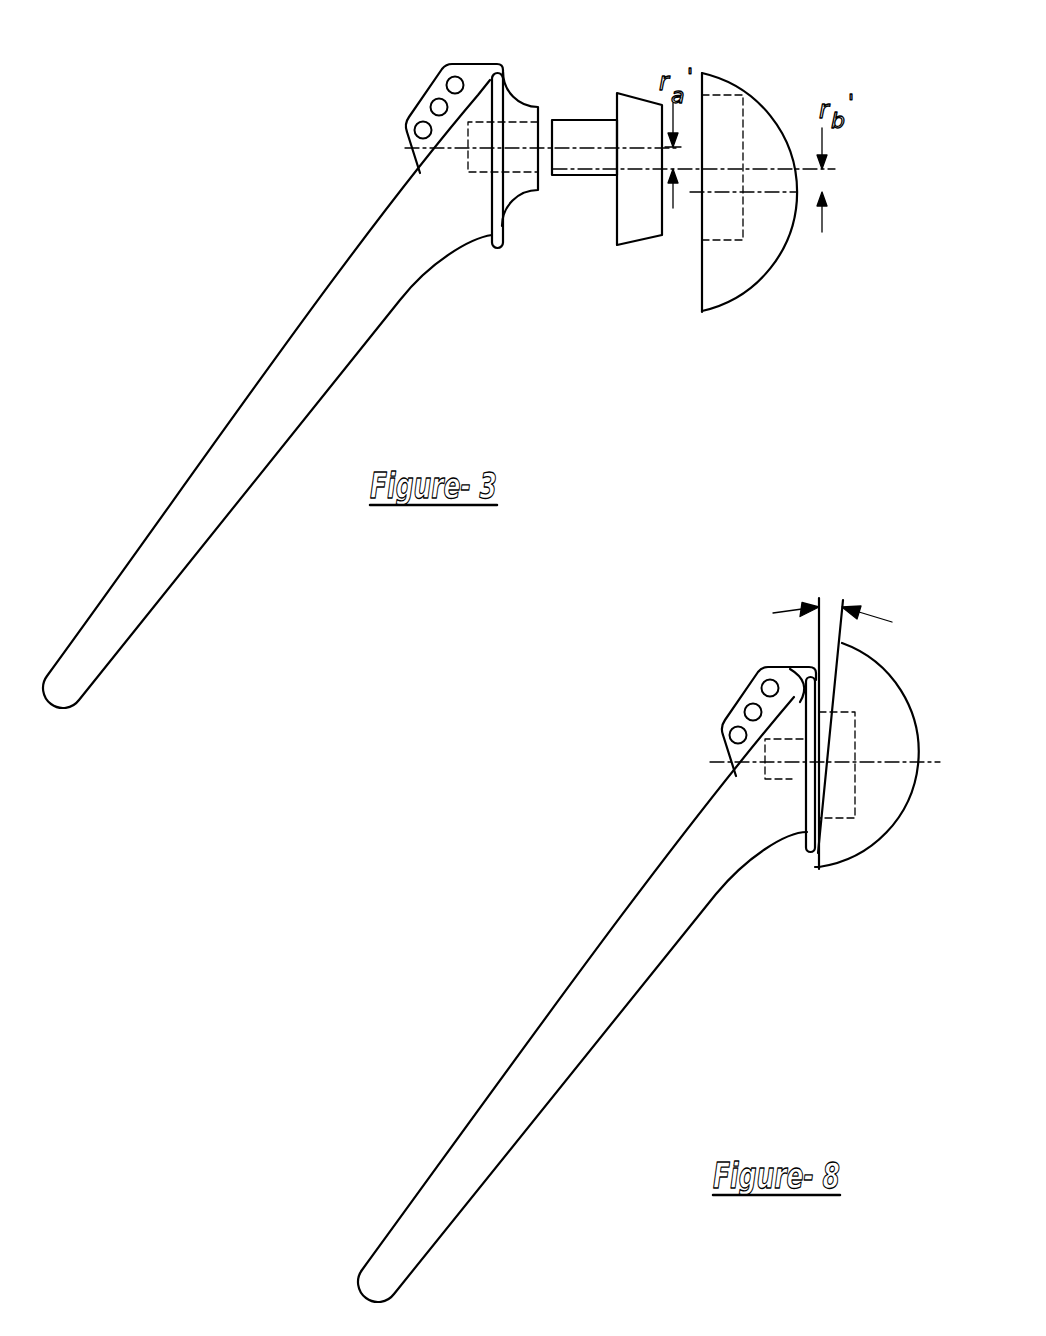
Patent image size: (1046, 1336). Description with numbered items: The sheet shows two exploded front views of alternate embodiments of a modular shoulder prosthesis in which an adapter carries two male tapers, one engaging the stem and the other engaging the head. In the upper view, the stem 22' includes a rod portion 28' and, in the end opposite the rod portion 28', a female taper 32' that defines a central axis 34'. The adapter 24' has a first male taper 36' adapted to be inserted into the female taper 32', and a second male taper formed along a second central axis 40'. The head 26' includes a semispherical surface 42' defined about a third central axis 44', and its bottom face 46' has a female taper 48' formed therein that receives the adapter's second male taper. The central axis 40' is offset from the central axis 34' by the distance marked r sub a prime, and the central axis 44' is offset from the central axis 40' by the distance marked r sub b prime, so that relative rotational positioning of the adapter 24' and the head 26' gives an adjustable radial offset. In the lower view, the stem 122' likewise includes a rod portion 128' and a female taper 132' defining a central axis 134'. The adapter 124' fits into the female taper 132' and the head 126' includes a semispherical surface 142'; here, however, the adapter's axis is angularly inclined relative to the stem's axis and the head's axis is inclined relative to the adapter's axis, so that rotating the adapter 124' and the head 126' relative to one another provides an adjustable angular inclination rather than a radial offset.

In FIG. 3, the stem 22' is at (273, 386).
In FIG. 3, the adapter 24' is at (565, 171).
In FIG. 3, the head 26' is at (694, 115).
In FIG. 3, the rod portion 28' is at (267, 394).
In FIG. 3, the female taper 32' is at (509, 198).
In FIG. 3, the central axis 34' is at (510, 169).
In FIG. 3, the first male taper 36' is at (583, 183).
In FIG. 3, the central axis 40' is at (626, 191).
In FIG. 3, the semispherical surface 42' is at (714, 179).
In FIG. 3, the central axis 44' is at (783, 233).
In FIG. 3, the bottom face 46' is at (664, 199).
In FIG. 3, the female taper 48' is at (737, 135).
In FIG. 8, the stem 122' is at (587, 960).
In FIG. 8, the adapter 124' is at (767, 660).
In FIG. 8, the head 126' is at (889, 738).
In FIG. 8, the rod portion 128' is at (582, 999).
In FIG. 8, the female taper 132' is at (798, 825).
In FIG. 8, the central axis 134' is at (786, 740).
In FIG. 8, the semispherical surface 142' is at (887, 748).